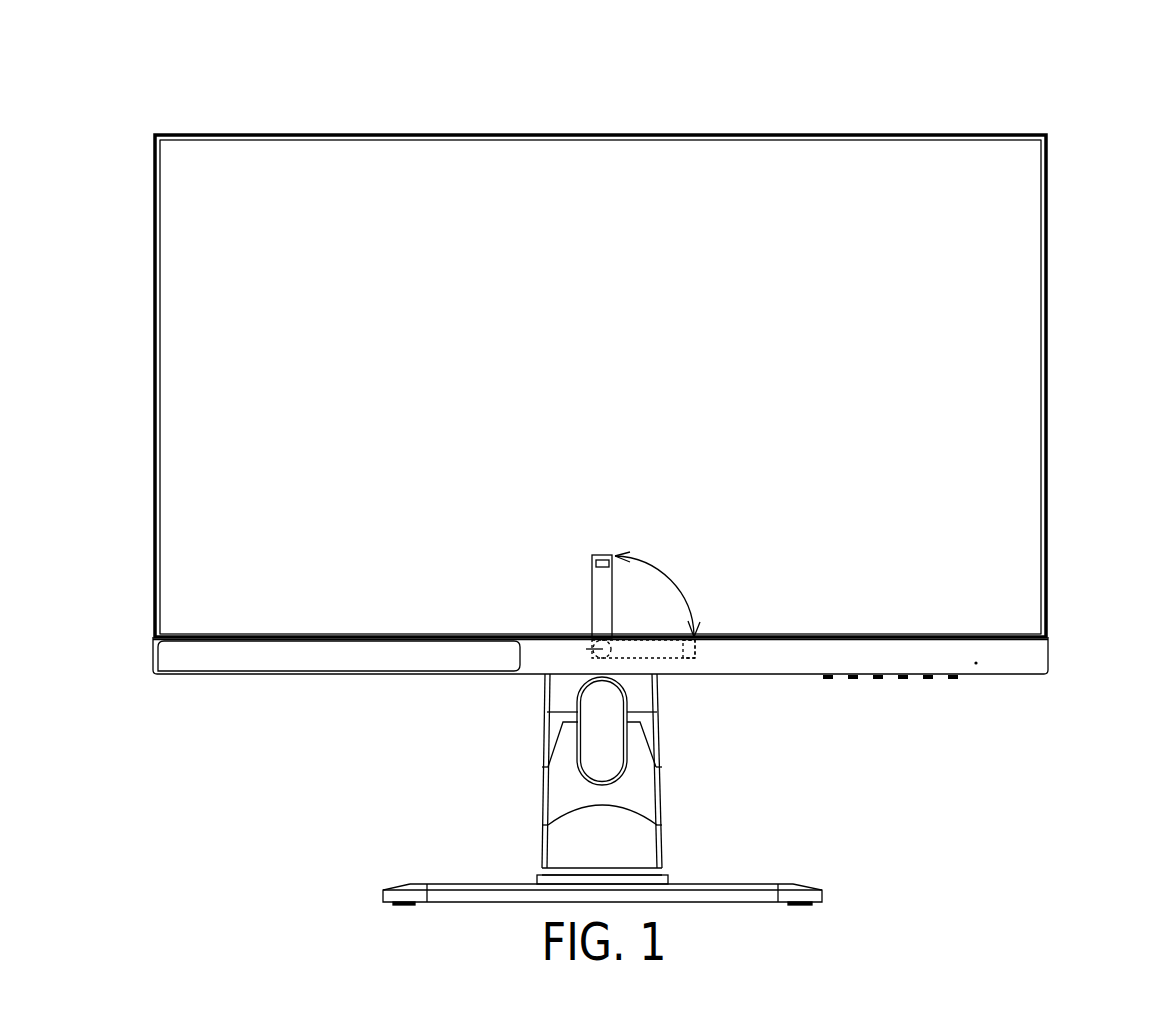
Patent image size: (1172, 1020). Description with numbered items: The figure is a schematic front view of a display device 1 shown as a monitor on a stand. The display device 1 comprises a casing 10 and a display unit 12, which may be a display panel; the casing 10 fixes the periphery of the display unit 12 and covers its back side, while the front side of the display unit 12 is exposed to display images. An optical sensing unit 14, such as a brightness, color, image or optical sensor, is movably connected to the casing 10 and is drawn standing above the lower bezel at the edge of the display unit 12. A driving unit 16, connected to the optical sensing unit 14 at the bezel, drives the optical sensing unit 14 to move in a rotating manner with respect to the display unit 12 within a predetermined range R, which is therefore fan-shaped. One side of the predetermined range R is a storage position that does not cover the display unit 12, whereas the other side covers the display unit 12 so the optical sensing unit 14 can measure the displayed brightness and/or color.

The display device 1 is at (1068, 108).
The casing 10 is at (368, 676).
The display unit 12 is at (188, 294).
The optical sensing unit 14 is at (592, 593).
The driving unit 16 is at (600, 649).
The predetermined range R is at (657, 594).